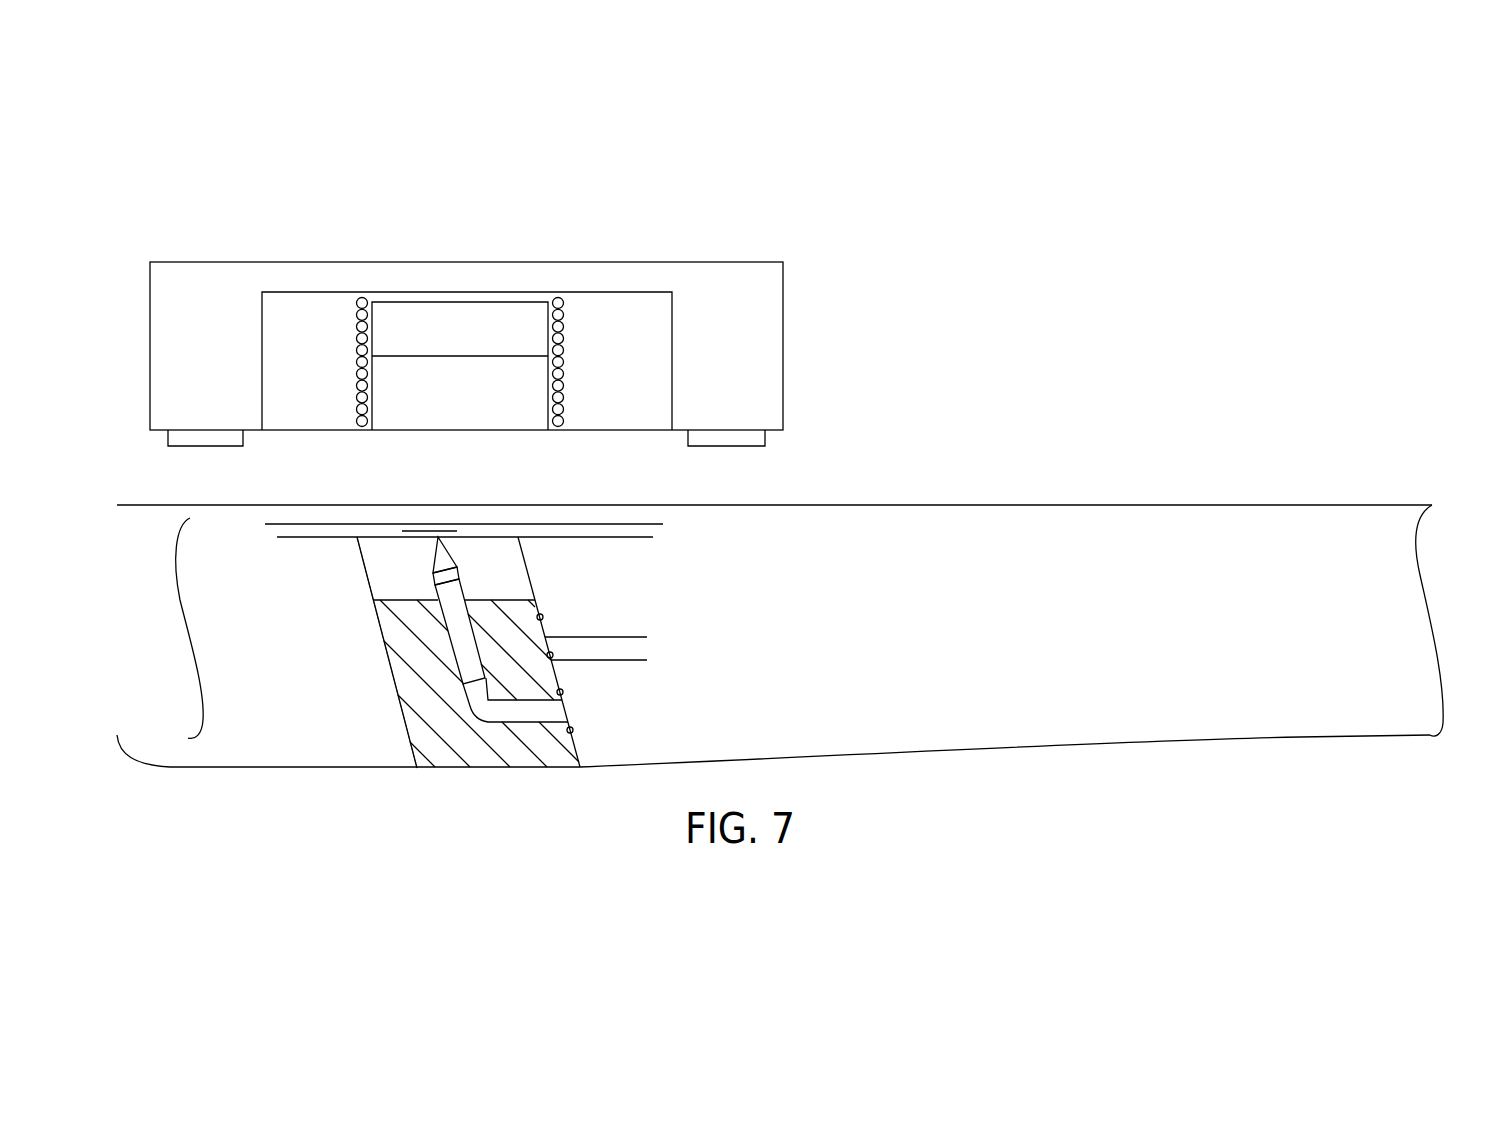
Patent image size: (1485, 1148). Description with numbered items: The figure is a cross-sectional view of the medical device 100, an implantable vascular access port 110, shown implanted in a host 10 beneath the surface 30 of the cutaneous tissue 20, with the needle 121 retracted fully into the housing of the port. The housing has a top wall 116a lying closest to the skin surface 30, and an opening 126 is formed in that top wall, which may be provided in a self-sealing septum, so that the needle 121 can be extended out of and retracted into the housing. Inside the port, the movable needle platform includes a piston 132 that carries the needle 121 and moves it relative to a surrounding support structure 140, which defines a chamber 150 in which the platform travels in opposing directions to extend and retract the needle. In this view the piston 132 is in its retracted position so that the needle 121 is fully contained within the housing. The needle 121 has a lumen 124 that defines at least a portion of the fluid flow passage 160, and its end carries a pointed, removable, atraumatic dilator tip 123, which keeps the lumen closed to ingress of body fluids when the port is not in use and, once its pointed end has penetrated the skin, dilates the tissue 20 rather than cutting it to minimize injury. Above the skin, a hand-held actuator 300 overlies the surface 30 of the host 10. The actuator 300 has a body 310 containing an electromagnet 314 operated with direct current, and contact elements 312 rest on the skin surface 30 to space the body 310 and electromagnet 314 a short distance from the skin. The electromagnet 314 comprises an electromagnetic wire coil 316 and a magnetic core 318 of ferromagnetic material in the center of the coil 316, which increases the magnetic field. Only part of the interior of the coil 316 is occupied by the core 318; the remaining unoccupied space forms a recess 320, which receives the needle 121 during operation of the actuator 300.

The host 10 is at (1335, 419).
The cutaneous tissue 20 is at (1407, 568).
The surface of cutaneous tissue 30 is at (1153, 503).
The medical device 100 is at (882, 444).
The vascular access port 110 is at (710, 497).
The top wall 116a is at (647, 532).
The needle 121 is at (405, 645).
The dilator tip 123 is at (433, 563).
The needle lumen 124 is at (461, 585).
The opening 126 is at (402, 531).
The piston 132 is at (402, 704).
The support structure 140 is at (293, 558).
The chamber 150 is at (517, 575).
The fluid flow passage 160 is at (622, 647).
The hand-held actuator 300 is at (752, 229).
The body 310 is at (765, 333).
The contact elements 312 is at (165, 436).
The electromagnet 314 is at (272, 308).
The coil 316 is at (363, 300).
The magnetic core 318 is at (393, 320).
The recess 320 is at (515, 397).